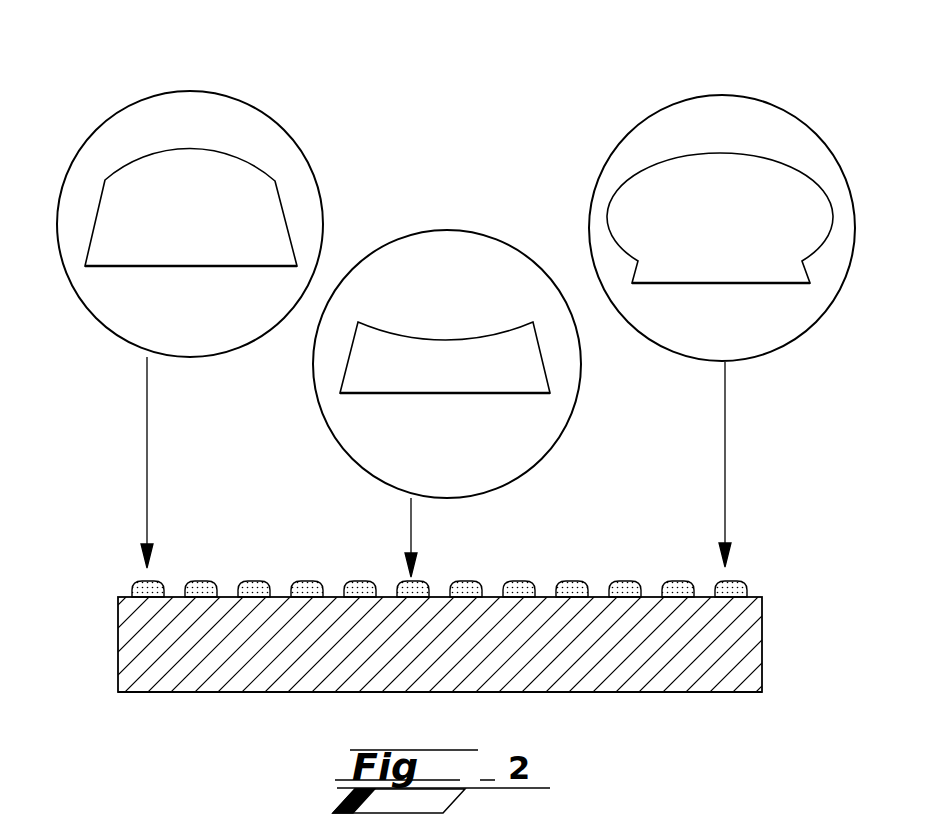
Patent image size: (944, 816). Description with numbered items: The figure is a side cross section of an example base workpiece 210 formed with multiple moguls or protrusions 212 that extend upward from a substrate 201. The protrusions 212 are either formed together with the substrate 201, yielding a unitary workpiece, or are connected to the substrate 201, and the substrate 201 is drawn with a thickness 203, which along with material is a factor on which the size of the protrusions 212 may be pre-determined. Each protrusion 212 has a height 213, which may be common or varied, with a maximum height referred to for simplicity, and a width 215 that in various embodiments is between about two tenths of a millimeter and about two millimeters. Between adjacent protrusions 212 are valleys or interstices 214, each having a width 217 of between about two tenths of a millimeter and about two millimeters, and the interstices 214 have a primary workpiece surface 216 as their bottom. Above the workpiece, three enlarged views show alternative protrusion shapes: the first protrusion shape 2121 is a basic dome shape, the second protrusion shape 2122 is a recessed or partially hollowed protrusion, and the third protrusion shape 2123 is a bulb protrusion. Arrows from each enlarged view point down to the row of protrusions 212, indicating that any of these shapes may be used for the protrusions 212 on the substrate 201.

The base workpiece 210 is at (105, 663).
The substrate 201 is at (655, 692).
The thickness 203 is at (767, 597).
The protrusions 212 is at (533, 565).
The first protrusion shape 2121 is at (303, 147).
The second protrusion shape 2122 is at (450, 230).
The third protrusion shape 2123 is at (610, 155).
The height 213 is at (63, 612).
The interstices 214 is at (276, 565).
The width 215 is at (182, 520).
The primary workpiece surface 216 is at (585, 568).
The width 217 is at (697, 525).